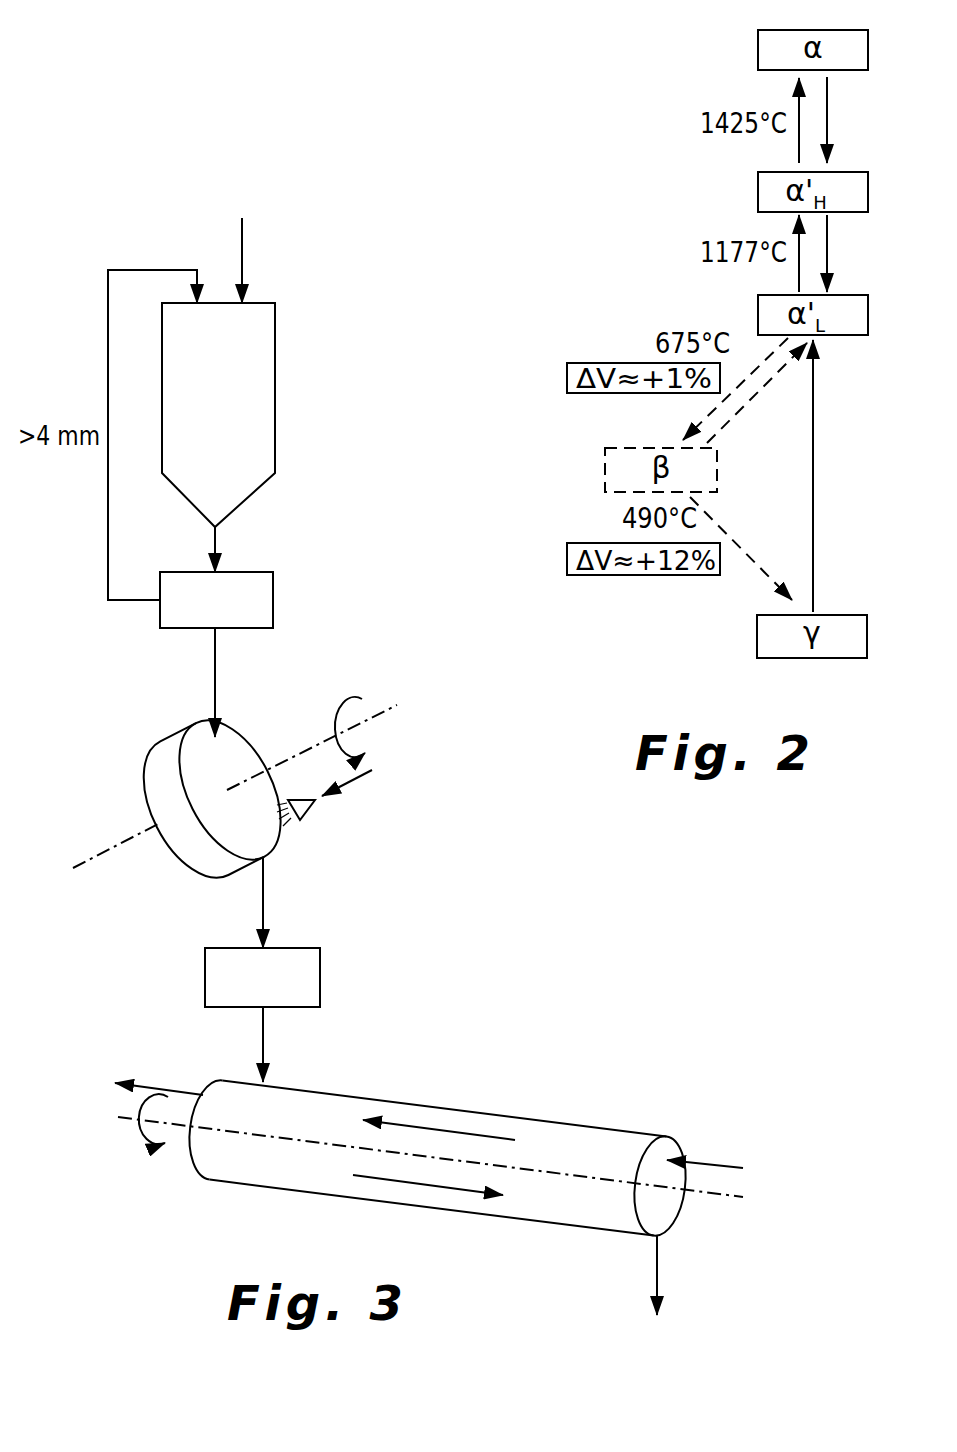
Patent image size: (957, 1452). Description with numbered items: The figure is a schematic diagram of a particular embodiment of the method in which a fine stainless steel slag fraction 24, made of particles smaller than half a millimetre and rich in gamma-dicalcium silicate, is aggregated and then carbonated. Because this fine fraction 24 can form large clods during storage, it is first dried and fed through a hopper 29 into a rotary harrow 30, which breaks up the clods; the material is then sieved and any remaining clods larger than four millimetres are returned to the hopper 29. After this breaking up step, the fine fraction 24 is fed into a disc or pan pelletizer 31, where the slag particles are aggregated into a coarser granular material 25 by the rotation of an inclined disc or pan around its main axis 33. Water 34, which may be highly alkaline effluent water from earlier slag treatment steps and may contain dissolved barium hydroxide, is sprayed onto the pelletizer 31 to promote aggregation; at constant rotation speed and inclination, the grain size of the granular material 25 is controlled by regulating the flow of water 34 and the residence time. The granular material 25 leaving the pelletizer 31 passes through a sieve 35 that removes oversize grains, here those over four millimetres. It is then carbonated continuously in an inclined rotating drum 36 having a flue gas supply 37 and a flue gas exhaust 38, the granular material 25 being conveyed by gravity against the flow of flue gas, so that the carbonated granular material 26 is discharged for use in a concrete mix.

The fine fraction 24 is at (242, 273).
The hopper 29 is at (275, 403).
The rotary harrow 30 is at (273, 597).
The disc or pan pelletizer 31 is at (178, 807).
The main axis 33 is at (380, 712).
The water 34 is at (315, 800).
The coarser granular material 25 is at (263, 912).
The sieve 35 is at (320, 977).
The inclined rotating drum 36 is at (528, 1117).
The flue gas supply 37 is at (713, 1163).
The flue gas exhaust 38 is at (178, 1093).
The carbonated granular material 26 is at (657, 1278).